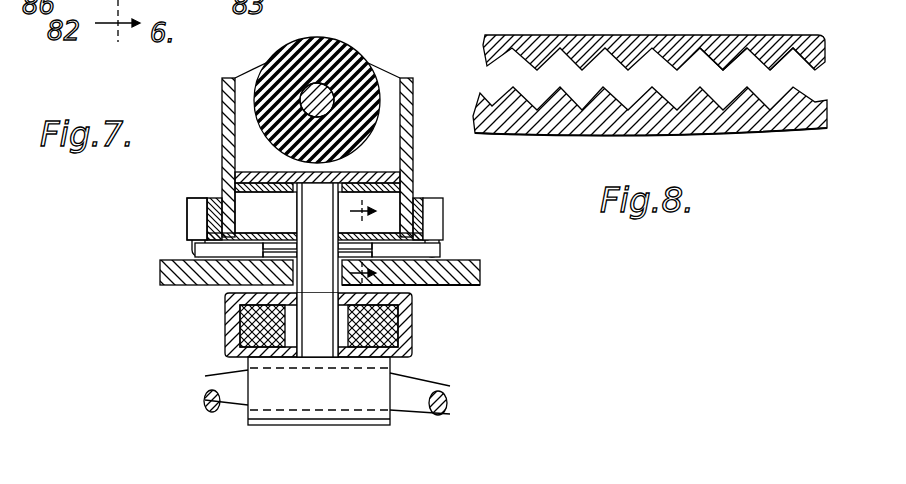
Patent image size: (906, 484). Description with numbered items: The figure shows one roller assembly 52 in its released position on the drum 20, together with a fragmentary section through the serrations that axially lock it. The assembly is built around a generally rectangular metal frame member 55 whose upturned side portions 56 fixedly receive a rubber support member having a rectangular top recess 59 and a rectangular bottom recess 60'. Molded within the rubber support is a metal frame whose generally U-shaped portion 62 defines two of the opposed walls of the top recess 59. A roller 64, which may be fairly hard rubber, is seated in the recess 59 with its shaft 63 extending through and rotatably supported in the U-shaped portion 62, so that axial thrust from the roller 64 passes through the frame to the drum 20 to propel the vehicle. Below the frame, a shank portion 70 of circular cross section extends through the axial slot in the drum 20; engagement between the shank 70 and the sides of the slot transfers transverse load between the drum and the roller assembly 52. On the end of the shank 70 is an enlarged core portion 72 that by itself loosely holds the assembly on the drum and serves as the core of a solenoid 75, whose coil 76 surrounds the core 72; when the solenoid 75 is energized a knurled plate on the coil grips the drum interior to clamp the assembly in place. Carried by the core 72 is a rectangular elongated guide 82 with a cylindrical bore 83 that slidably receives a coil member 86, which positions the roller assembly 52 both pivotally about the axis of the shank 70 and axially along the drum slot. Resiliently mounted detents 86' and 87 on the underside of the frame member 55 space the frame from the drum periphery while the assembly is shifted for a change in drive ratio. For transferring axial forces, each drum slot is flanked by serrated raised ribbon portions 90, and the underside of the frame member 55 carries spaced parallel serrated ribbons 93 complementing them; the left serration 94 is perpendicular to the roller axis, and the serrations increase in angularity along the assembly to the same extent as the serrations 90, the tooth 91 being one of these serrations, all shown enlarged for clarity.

In FIG. 7, the drum 20 is at (172, 287).
In FIG. 8, the drum 20 is at (560, 125).
In FIG. 7, the roller assembly 52 is at (160, 190).
In FIG. 7, the metal frame member 55 is at (412, 205).
In FIG. 8, the metal frame member 55 is at (718, 45).
In FIG. 7, the upturned side portions 56 is at (204, 200).
In FIG. 7, the top recess 59 is at (388, 72).
In FIG. 7, the bottom recess 60' is at (171, 219).
In FIG. 7, the U-shaped portion 62 is at (222, 90).
In FIG. 7, the shaft 63 is at (292, 72).
In FIG. 7, the roller 64 is at (346, 62).
In FIG. 7, the shank portion 70 is at (286, 178).
In FIG. 7, the core portion 72 is at (317, 270).
In FIG. 7, the solenoid 75 is at (212, 330).
In FIG. 7, the coil 76 is at (400, 330).
In FIG. 7, the guide 82 is at (258, 418).
In FIG. 7, the cylindrical bore 83 is at (402, 408).
In FIG. 7, the coil member 86 is at (439, 378).
In FIG. 7, the resiliently mounted detent 86' is at (190, 243).
In FIG. 7, the resiliently mounted detent 87 is at (441, 254).
In FIG. 7, the serrated raised ribbon portions 90 is at (428, 286).
In FIG. 8, the serrated raised ribbon portions 90 is at (748, 100).
In FIG. 8, the tooth 91 is at (780, 42).
In FIG. 8, the serrated ribbons 93 is at (652, 42).
In FIG. 7, the left serration 94 is at (272, 246).